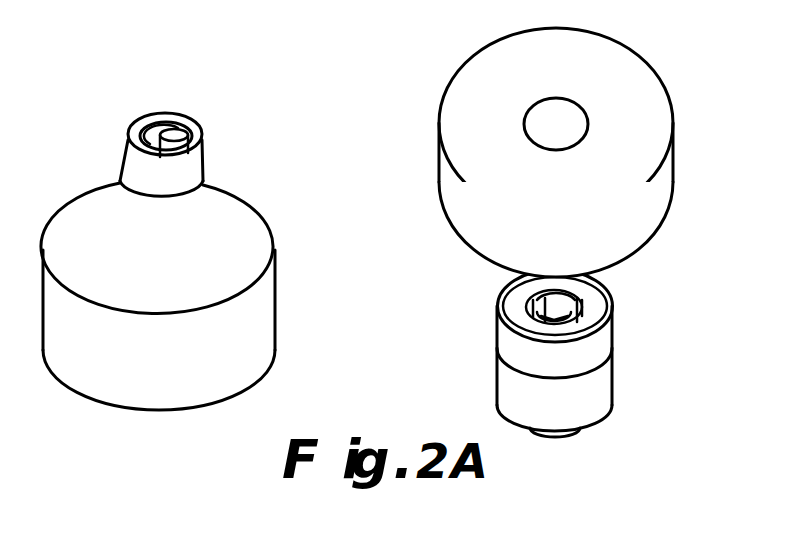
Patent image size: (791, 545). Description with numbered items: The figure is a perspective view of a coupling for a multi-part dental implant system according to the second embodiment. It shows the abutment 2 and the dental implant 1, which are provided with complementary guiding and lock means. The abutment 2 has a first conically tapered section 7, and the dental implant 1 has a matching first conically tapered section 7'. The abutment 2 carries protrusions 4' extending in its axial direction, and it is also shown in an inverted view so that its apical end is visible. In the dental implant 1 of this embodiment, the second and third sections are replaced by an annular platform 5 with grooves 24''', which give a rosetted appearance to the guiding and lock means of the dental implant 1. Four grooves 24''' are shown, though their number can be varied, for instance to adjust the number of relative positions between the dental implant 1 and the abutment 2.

The dental implant 1 is at (587, 397).
The abutment 2 is at (215, 207).
The protrusions 4' is at (206, 110).
The annular platform 5 is at (580, 302).
The first conically tapered section 7 is at (135, 154).
The first conically tapered section 7' is at (602, 286).
The grooves 24''' is at (479, 316).